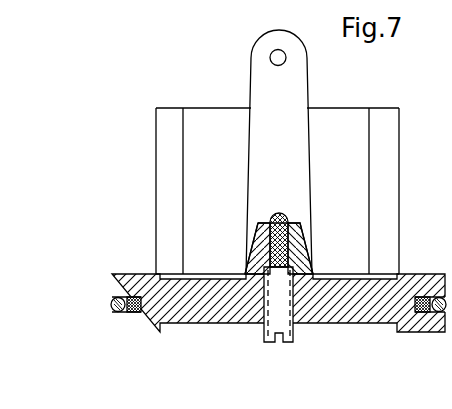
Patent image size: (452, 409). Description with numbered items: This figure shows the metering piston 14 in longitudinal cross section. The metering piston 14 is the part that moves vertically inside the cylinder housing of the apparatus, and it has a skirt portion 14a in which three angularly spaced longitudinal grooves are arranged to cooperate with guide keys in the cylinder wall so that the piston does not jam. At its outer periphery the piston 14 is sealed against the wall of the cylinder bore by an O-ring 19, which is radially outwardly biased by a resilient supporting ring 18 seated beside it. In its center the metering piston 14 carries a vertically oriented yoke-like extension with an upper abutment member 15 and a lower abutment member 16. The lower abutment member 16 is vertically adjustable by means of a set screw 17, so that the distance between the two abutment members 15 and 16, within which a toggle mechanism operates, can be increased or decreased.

The metering piston 14 is at (347, 302).
The skirt portion 14a is at (205, 127).
The upper abutment member 15 is at (270, 60).
The lower abutment member 16 is at (277, 230).
The set screw 17 is at (278, 345).
The resilient supporting ring 18 is at (136, 307).
The O-ring 19 is at (112, 302).